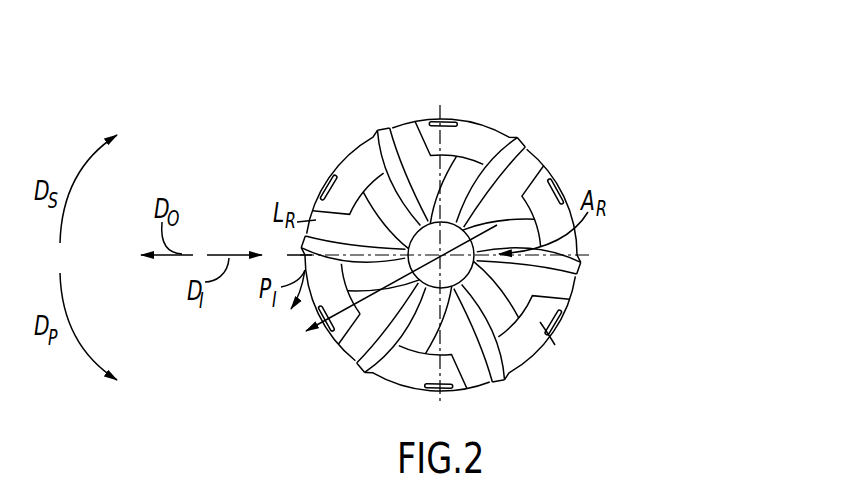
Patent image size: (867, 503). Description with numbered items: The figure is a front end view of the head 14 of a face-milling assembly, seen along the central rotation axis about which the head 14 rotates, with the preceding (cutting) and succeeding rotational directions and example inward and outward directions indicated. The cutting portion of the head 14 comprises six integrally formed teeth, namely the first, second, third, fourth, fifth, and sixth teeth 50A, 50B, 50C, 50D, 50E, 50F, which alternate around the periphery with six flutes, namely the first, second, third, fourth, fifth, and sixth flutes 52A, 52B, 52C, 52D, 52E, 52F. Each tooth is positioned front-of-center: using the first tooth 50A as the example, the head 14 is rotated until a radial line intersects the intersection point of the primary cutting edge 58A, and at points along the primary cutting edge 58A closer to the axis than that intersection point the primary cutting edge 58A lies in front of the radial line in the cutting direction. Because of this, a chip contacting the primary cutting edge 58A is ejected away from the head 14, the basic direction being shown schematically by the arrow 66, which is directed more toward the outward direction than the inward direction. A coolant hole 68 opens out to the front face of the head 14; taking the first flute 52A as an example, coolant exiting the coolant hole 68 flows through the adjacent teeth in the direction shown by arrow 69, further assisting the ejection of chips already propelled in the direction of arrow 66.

The head 14 is at (651, 66).
The first tooth 50A is at (287, 243).
The second tooth 50B is at (349, 379).
The third tooth 50C is at (514, 403).
The fourth tooth 50D is at (599, 256).
The fifth tooth 50E is at (530, 135).
The sixth tooth 50F is at (371, 127).
The first flute 52A is at (242, 314).
The second flute 52B is at (409, 398).
The third flute 52C is at (573, 329).
The fourth flute 52D is at (563, 172).
The fifth flute 52E is at (422, 119).
The sixth flute 52F is at (334, 157).
The primary cutting edge 58A is at (307, 313).
The arrow 66 is at (320, 259).
The coolant hole 68 is at (548, 331).
The arrow 69 is at (340, 317).